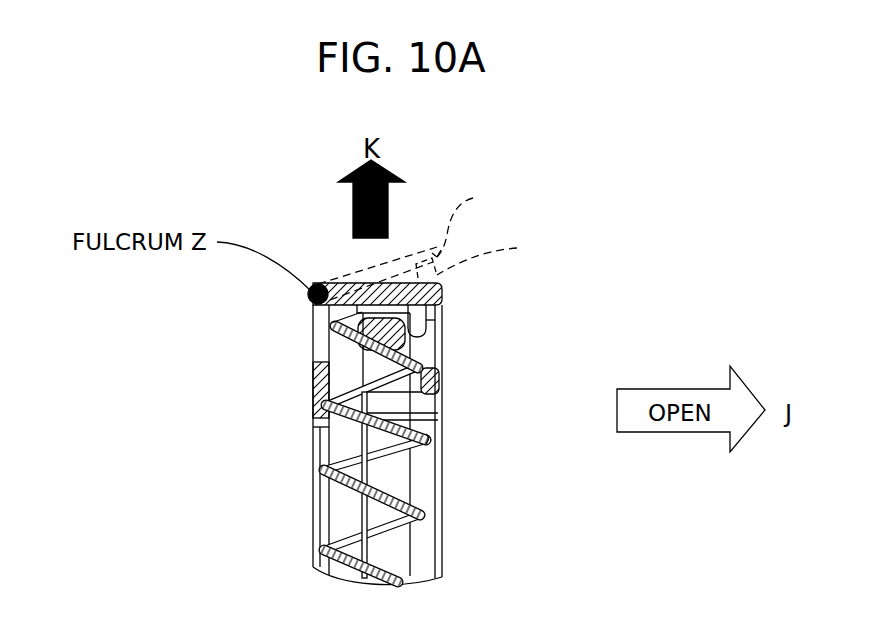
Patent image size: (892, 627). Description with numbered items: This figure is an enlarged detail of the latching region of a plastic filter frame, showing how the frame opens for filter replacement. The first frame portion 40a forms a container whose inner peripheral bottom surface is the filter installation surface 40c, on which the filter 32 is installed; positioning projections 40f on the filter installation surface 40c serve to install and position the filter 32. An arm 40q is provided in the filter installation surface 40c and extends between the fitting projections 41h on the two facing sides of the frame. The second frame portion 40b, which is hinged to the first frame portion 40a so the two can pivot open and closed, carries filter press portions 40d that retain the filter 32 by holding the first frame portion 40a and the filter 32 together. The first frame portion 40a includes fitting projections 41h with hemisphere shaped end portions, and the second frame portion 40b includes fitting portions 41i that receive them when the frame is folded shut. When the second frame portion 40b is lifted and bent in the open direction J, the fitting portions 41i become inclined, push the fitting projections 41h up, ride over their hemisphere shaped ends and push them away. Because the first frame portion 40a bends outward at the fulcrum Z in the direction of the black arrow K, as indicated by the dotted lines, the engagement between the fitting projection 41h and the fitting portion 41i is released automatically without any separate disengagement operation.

The first frame portion 40a is at (443, 292).
The fitting projection 41h is at (428, 320).
The fitting portion 41i is at (430, 343).
The filter press portion 40d is at (438, 412).
The positioning projection 40f is at (431, 436).
The filter 32 is at (422, 512).
The second frame portion 40b is at (443, 558).
The filter installation surface 40c is at (318, 358).
The arm 40q is at (322, 447).